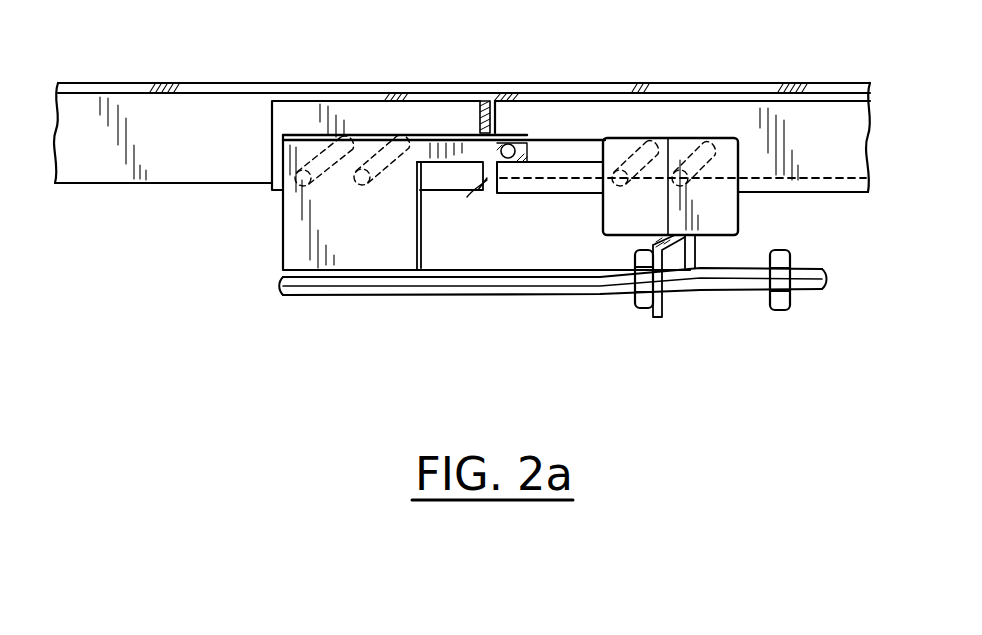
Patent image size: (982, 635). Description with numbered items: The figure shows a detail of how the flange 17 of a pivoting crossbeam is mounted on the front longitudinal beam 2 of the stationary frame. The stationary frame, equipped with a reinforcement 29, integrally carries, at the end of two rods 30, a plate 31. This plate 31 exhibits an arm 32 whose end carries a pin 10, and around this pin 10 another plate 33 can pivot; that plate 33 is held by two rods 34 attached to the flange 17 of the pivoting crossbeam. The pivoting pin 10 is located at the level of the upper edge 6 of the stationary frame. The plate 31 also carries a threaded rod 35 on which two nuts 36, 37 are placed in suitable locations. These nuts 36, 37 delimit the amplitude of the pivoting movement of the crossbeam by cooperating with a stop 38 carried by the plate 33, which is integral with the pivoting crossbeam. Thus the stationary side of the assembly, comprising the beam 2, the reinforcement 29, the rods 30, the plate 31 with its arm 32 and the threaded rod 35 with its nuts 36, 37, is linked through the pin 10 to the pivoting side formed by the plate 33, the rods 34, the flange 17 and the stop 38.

The front longitudinal beam 2 is at (202, 163).
The upper edge 6 is at (237, 83).
The pin 10 is at (523, 153).
The flange 17 is at (823, 163).
The reinforcement 29 is at (390, 110).
The rods 30 is at (370, 173).
The plate 31 is at (373, 255).
The arm 32 is at (453, 147).
The plate 33 is at (618, 147).
The rods 34 is at (660, 133).
The threaded rod 35 is at (497, 278).
The nut 36 is at (640, 308).
The nut 37 is at (782, 310).
The stop 38 is at (663, 302).